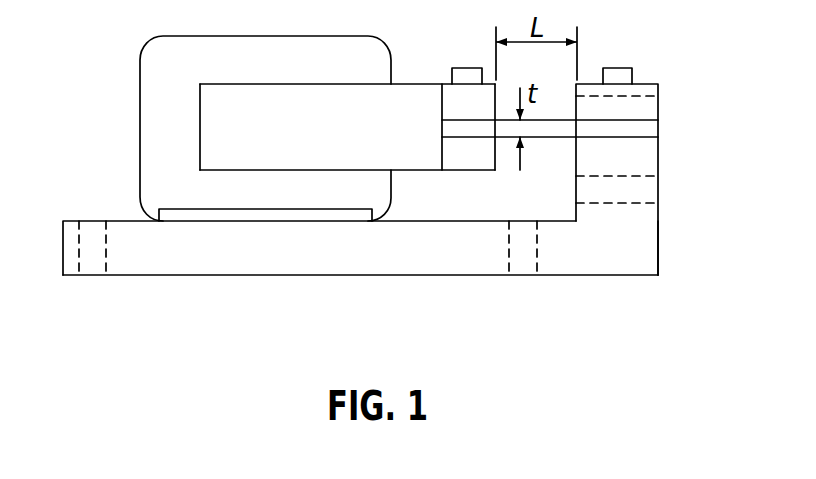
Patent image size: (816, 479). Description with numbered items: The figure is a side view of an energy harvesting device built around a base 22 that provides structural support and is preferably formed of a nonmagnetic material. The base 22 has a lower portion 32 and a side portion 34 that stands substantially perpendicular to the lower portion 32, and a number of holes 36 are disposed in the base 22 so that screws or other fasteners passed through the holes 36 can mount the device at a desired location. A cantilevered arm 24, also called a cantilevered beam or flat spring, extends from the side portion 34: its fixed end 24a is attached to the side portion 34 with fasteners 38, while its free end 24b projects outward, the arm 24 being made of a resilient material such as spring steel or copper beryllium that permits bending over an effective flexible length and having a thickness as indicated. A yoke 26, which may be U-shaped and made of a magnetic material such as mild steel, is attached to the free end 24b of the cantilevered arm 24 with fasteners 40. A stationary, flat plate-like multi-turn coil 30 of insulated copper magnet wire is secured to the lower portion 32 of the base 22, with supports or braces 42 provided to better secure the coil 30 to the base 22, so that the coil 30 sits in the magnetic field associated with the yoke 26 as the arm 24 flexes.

The base 22 is at (590, 276).
The cantilevered arm 24 is at (592, 184).
The fixed end 24a is at (648, 137).
The free end 24b is at (460, 127).
The yoke 26 is at (418, 84).
The coil 30 is at (140, 84).
The lower portion 32 is at (322, 277).
The side portion 34 is at (650, 158).
The holes 36 is at (106, 266).
The fasteners 38 is at (617, 68).
The fasteners 40 is at (467, 68).
The supports or braces 42 is at (201, 213).